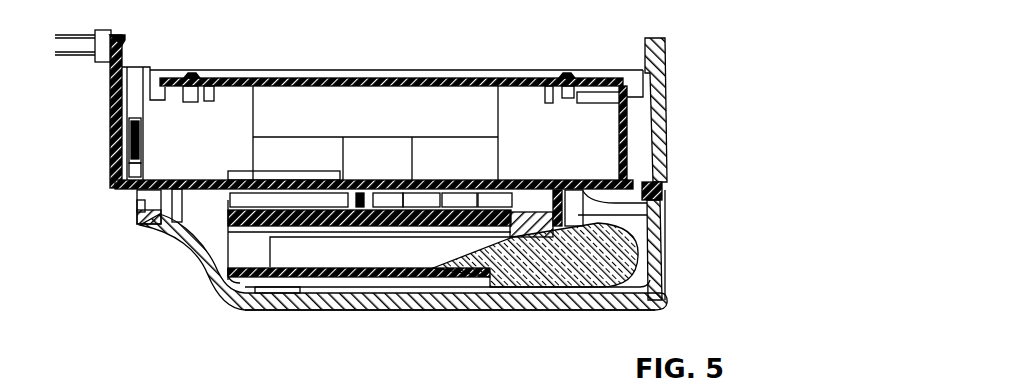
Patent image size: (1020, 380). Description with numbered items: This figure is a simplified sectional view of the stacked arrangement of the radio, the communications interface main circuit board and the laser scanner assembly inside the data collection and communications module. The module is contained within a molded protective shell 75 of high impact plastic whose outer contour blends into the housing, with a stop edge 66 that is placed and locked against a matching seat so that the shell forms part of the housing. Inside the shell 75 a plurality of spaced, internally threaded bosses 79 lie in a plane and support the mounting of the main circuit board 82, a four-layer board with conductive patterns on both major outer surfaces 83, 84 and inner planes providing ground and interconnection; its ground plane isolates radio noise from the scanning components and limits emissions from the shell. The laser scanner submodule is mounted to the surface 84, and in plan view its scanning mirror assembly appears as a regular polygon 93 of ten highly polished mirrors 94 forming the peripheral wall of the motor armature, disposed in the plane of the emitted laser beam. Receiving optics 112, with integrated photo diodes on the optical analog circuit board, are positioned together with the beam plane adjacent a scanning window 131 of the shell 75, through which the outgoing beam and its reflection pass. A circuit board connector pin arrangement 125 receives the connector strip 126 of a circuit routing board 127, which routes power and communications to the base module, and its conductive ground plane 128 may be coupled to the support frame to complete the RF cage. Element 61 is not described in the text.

The electrical connector 61 is at (100, 64).
The stop edge 66 is at (645, 48).
The protective shell 75 is at (540, 311).
The internally threaded bosses 79 is at (150, 208).
The main circuit board 82 is at (506, 175).
The major outer surface 83 is at (586, 180).
The major outer surface 84 is at (650, 202).
The regular polygon 93 is at (471, 182).
The mirrors 94 is at (438, 182).
The receiving optics 112 is at (640, 277).
The circuit board connector pin arrangement 125 is at (147, 168).
The circuit board connector strip 126 is at (146, 140).
The circuit routing board 127 is at (119, 60).
The conductive ground plane 128 is at (110, 108).
The scanning window 131 is at (666, 245).